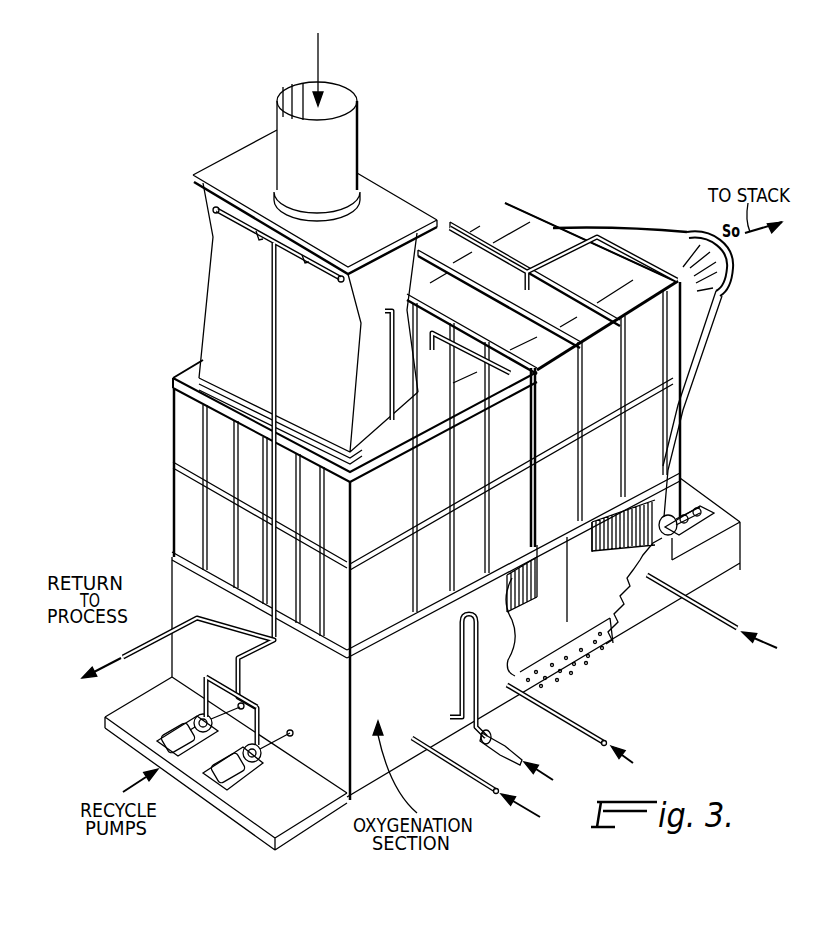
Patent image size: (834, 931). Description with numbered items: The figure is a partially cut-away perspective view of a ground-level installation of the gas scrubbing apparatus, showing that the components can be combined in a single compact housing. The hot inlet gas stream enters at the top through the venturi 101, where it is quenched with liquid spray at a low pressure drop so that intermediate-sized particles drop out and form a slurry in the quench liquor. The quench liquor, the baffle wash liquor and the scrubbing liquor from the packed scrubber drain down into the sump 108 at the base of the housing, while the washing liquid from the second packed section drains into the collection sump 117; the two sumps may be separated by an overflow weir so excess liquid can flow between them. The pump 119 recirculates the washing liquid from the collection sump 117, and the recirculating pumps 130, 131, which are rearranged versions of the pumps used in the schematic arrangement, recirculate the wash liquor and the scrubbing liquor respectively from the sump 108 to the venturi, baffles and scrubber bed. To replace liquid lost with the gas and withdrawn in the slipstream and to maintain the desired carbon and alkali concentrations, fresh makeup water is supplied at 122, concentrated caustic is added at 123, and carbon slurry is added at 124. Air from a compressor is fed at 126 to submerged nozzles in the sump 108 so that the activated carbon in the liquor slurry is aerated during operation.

The venturi 101 is at (325, 353).
The sump 108 is at (372, 767).
The collection sump 117 is at (607, 573).
The pump 119 is at (693, 507).
The makeup water supply 122 is at (705, 607).
The caustic addition point 123 is at (443, 760).
The carbon slurry addition point 124 is at (560, 715).
The air feed 126 is at (542, 773).
The pump 130 is at (255, 762).
The pump 131 is at (194, 724).